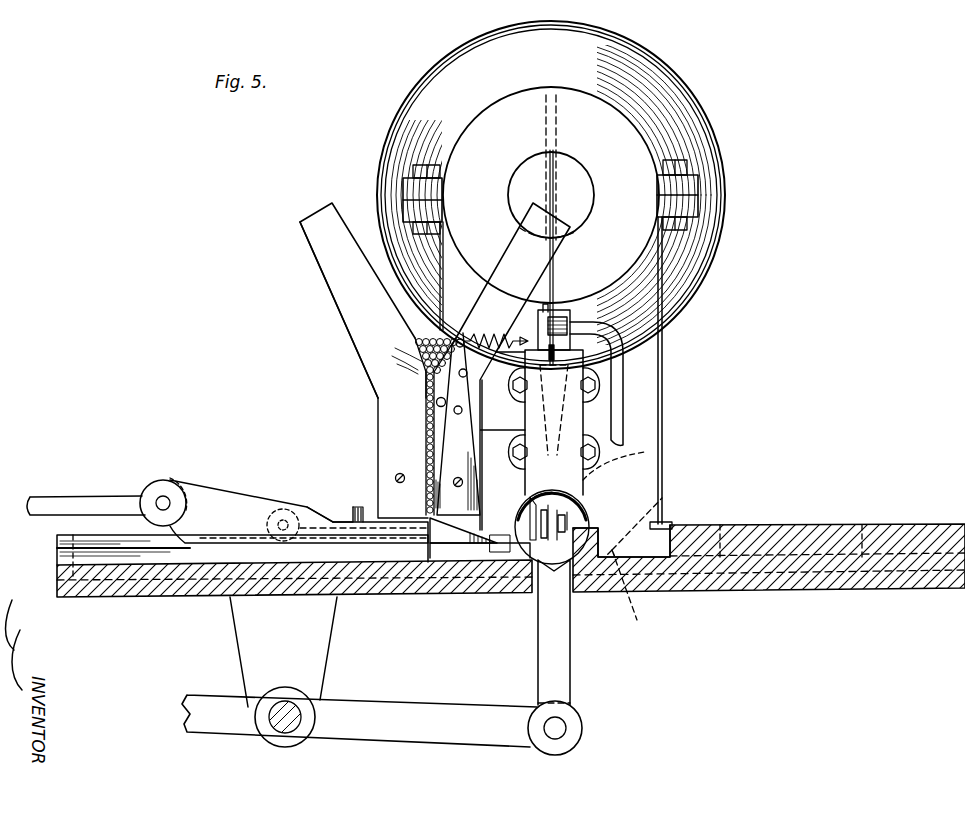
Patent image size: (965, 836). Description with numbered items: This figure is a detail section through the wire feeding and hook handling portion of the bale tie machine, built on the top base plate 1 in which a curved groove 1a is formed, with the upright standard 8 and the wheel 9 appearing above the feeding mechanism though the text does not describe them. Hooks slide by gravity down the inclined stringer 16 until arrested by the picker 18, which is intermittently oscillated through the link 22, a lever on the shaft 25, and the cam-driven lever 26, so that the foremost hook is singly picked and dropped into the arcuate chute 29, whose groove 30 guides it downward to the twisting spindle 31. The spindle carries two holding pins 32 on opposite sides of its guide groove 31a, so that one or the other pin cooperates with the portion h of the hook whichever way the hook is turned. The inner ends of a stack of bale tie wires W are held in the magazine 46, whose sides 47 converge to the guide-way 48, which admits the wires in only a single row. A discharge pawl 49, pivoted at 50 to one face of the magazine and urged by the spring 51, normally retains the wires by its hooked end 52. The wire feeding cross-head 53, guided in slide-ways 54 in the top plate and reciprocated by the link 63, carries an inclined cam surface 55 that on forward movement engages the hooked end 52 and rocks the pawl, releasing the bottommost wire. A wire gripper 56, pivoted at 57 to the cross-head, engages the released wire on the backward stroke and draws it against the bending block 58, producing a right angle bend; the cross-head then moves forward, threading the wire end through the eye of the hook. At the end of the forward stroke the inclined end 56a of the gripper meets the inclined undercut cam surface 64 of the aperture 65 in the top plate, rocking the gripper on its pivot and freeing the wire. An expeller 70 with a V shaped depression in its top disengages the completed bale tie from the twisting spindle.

The top base plate 1 is at (783, 528).
The curved groove 1a is at (670, 528).
The frame standard 8 is at (664, 372).
The fly wheel 9 is at (723, 166).
The inclined stringer 16 is at (556, 165).
The picker 18 is at (554, 296).
The link 22 is at (622, 420).
The shaft 25 is at (285, 734).
The lever 26 is at (224, 733).
The arcuate chute 29 is at (568, 430).
The groove 30 is at (540, 399).
The twisting spindle 31 is at (526, 519).
The guide groove 31a is at (533, 486).
The holding pins 32 is at (590, 497).
The magazine 46 is at (310, 262).
The sides 47 is at (343, 208).
The guide-way 48 is at (427, 431).
The discharge pawl 49 is at (384, 447).
The pivot 50 is at (437, 392).
The spring 51 is at (488, 336).
The hooked end 52 is at (422, 490).
The wire feeding cross-head 53 is at (284, 510).
The slide-ways 54 is at (190, 558).
The inclined cam surface 55 is at (318, 510).
The wire gripper 56 is at (445, 590).
The inclined end 56a is at (488, 590).
The pivot 57 is at (262, 512).
The bending block 58 is at (332, 508).
The link 63 is at (70, 503).
The inclined undercut cam surface 64 is at (629, 597).
The aperture 65 is at (657, 515).
The expeller 70 is at (540, 602).
The portion of the hook h is at (576, 528).
The bale tie wires W is at (425, 360).